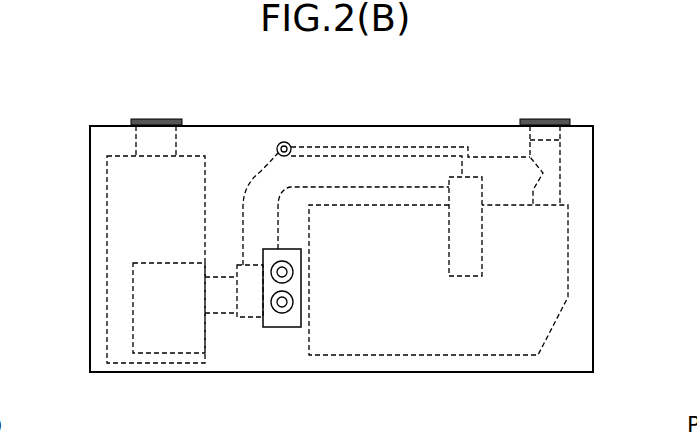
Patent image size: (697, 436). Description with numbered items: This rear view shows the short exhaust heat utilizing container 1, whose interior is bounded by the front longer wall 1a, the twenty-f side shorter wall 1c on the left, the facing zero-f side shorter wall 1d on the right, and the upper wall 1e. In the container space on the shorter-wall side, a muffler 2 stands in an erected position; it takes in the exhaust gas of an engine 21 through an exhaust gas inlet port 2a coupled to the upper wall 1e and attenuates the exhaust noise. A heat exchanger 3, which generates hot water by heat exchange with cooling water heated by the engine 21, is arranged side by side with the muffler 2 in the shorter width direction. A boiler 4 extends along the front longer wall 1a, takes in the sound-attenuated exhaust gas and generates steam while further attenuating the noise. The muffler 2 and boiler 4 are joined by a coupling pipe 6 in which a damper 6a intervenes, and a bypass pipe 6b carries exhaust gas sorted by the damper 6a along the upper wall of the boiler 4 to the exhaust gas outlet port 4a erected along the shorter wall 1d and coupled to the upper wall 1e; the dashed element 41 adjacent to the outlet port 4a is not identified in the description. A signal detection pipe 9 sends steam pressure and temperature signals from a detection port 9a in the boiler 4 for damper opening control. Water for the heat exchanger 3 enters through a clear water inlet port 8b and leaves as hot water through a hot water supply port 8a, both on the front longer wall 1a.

The exhaust heat utilizing container 1 is at (416, 105).
The front longer wall 1a is at (240, 186).
The 20 f side shorter wall 1c is at (90, 198).
The 0 f side shorter wall 1d is at (595, 239).
The upper wall 1e is at (473, 126).
The muffler 2 is at (122, 226).
The exhaust gas inlet port 2a is at (158, 119).
The engine 21 is at (147, 142).
The heat exchanger 3 is at (150, 314).
The boiler 4 is at (421, 312).
The exhaust gas outlet port 4a is at (545, 119).
The connection port 41 is at (548, 161).
The coupling pipe 6 is at (213, 318).
The damper 6a is at (249, 318).
The bypass pipe 6b is at (258, 167).
The hot water supply port 8a is at (293, 270).
The clear water inlet port 8b is at (293, 300).
The signal detection pipe 9 is at (327, 143).
The detection port 9a is at (284, 141).